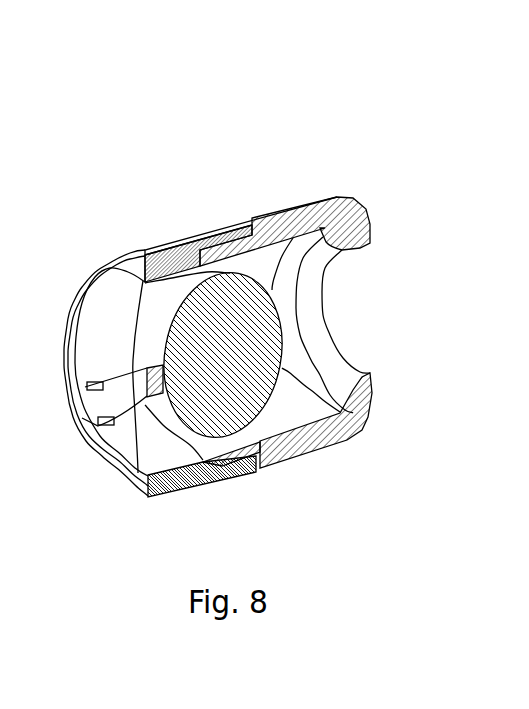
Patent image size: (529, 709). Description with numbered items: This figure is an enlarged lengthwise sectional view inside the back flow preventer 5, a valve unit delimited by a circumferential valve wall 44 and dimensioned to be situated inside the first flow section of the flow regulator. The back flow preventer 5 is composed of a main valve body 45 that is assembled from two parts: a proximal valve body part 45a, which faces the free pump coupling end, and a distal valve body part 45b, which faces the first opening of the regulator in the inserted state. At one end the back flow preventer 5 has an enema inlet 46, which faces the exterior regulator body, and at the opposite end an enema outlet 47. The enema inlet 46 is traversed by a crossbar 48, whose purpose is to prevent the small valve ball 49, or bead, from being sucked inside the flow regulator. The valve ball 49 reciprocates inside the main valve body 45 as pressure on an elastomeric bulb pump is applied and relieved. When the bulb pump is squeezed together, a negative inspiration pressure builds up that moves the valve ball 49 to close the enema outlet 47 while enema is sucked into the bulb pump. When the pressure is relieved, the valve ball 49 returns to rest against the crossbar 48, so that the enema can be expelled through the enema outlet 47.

The back flow preventer 5 is at (195, 321).
The circumferential valve wall 44 is at (343, 196).
The main valve body 45 is at (228, 222).
The proximal valve body part 45a is at (168, 494).
The distal valve body part 45b is at (341, 442).
The enema inlet 46 is at (140, 443).
The enema outlet 47 is at (370, 324).
The crossbar 48 is at (97, 403).
The valve ball 49 is at (138, 285).